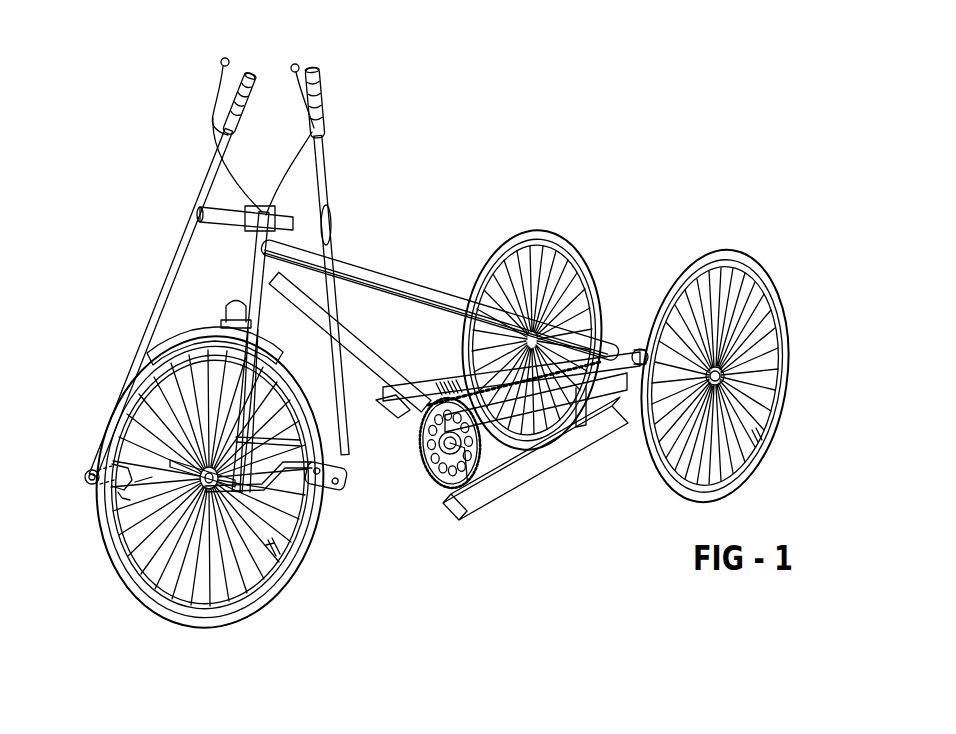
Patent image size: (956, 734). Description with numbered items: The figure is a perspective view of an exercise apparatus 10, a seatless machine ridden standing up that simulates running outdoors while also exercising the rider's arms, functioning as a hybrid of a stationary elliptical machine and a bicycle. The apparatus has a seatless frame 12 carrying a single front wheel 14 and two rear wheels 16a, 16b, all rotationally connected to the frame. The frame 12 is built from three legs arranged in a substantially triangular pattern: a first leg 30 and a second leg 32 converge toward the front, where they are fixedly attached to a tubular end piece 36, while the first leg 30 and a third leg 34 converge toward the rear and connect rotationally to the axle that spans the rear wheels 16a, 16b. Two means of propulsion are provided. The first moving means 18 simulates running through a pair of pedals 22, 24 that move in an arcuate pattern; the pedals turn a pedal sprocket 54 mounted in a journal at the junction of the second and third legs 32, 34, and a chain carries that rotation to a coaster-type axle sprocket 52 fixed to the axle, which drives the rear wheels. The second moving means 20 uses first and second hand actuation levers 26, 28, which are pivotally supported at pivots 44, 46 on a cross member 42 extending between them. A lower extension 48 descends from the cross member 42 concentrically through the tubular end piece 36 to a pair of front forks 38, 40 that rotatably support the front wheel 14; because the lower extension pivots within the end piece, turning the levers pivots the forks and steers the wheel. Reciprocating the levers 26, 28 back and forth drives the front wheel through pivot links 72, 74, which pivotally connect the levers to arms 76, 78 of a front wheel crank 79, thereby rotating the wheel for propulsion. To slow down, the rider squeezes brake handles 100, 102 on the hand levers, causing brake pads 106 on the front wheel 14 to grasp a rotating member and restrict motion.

The exercise apparatus 10 is at (603, 126).
The seatless frame 12 is at (407, 283).
The front wheel 14 is at (177, 622).
The rear wheel 16a is at (757, 253).
The rear wheel 16b is at (567, 238).
The first moving means 18 is at (590, 562).
The second moving means 20 is at (398, 600).
The pedal 22 is at (583, 440).
The pedal 24 is at (428, 377).
The first hand actuation lever 26 is at (320, 100).
The second hand actuation lever 28 is at (246, 72).
The first leg 30 is at (450, 300).
The second leg 32 is at (353, 363).
The third leg 34 is at (626, 398).
The tubular end piece 36 is at (197, 263).
The front fork 38 is at (277, 440).
The front fork 40 is at (172, 412).
The cross member 42 is at (262, 210).
The pivot 44 is at (331, 226).
The pivot 46 is at (200, 209).
The lower extension 48 is at (222, 306).
The axle sprocket 52 is at (638, 349).
The pedal sprocket 54 is at (430, 488).
The pivot link 72 is at (330, 497).
The pivot link 74 is at (88, 470).
The crank arm 76 is at (303, 517).
The crank arm 78 is at (127, 497).
The front wheel crank 79 is at (127, 547).
The brake handle 100 is at (292, 70).
The brake handle 102 is at (218, 80).
The brake pads 106 is at (177, 338).